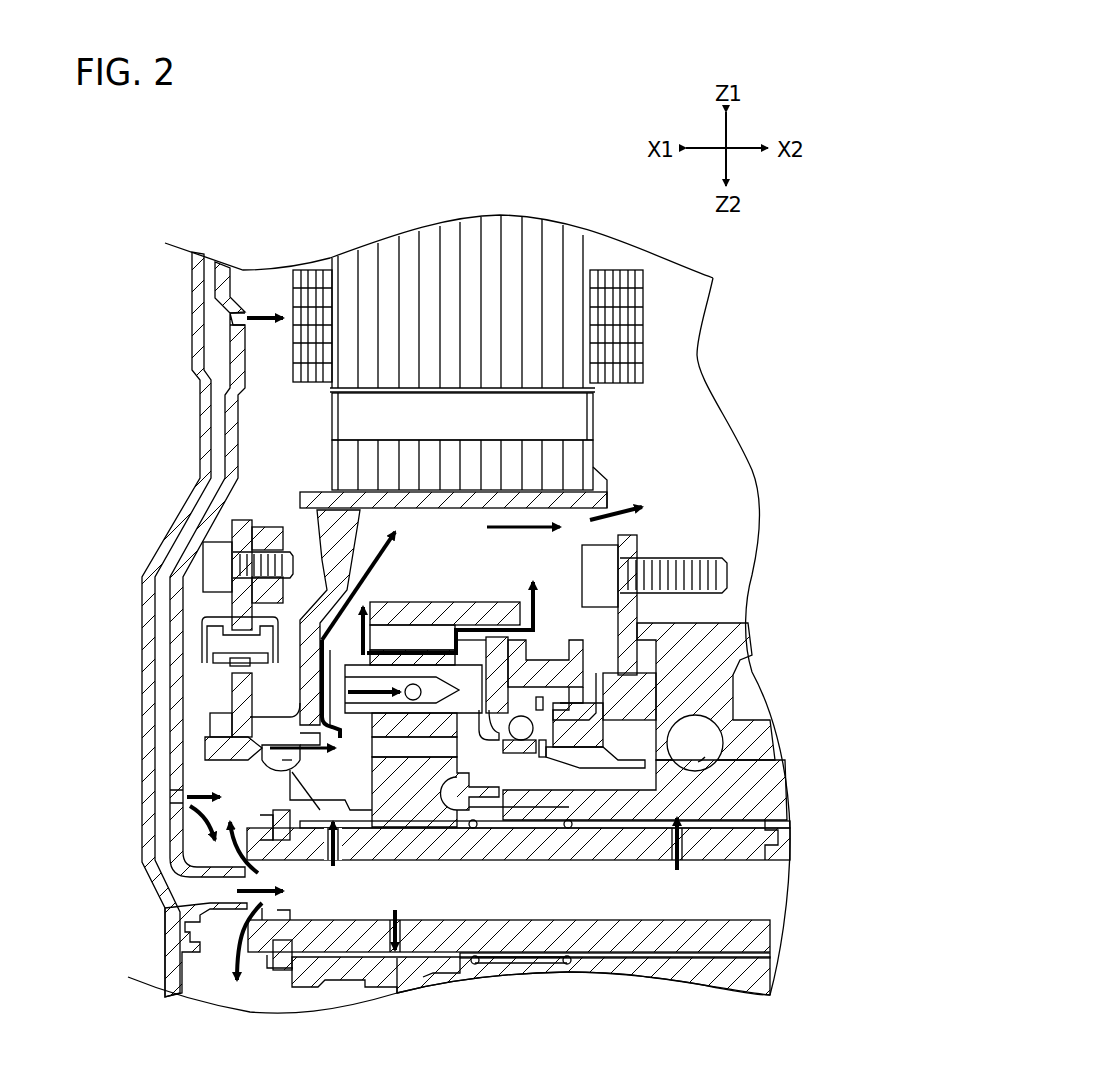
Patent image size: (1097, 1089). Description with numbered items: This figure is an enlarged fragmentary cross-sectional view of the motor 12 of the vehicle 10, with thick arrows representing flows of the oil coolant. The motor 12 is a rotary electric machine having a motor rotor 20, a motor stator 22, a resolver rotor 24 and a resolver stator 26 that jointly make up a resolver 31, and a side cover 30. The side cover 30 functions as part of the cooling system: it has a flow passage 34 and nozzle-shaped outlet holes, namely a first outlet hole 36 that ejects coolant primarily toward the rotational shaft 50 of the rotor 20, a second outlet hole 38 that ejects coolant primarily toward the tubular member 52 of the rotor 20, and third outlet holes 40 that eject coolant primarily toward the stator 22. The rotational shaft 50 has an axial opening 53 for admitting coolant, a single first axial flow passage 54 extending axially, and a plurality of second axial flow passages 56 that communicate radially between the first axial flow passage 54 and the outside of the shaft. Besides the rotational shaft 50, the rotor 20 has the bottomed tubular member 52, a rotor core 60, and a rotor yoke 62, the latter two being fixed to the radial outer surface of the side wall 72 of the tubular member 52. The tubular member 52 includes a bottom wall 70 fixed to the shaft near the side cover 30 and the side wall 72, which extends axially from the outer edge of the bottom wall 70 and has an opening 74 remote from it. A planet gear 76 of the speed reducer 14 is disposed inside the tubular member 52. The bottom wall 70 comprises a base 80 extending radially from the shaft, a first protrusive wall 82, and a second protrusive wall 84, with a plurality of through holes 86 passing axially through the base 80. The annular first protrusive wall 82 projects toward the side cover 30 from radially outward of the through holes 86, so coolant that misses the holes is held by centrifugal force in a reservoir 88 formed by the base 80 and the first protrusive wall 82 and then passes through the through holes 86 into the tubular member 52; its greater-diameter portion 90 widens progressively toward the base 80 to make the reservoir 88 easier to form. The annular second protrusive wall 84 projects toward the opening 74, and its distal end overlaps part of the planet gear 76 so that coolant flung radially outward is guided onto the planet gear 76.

The vehicle 10 is at (468, 169).
The motor 12 is at (140, 388).
The speed reducer 14 is at (788, 730).
The motor rotor 20 is at (608, 478).
The motor stator 22 is at (645, 290).
The resolver rotor 24 is at (240, 660).
The resolver stator 26 is at (243, 680).
The side cover 30 is at (140, 818).
The resolver 31 is at (80, 603).
The flow passage 34 is at (215, 340).
The first outlet hole 36 is at (213, 892).
The second outlet hole 38 is at (172, 790).
The third outlet hole 40 is at (232, 318).
The rotational shaft 50 is at (775, 848).
The tubular member 52 is at (600, 470).
The axial opening 53 is at (265, 900).
The first axial flow passage 54 is at (430, 893).
The second axial flow passages 56 is at (340, 862).
The rotor core 60 is at (555, 408).
The rotor yoke 62 is at (455, 470).
The bottom wall 70 is at (295, 668).
The side wall 72 is at (440, 500).
The opening 74 is at (600, 533).
The planet gear 76 is at (430, 598).
The base 80 is at (298, 686).
The first protrusive wall 82 is at (208, 747).
The second protrusive wall 84 is at (328, 742).
The through holes 86 is at (300, 782).
The reservoir 88 is at (260, 747).
The greater-diameter portion 90 is at (265, 762).